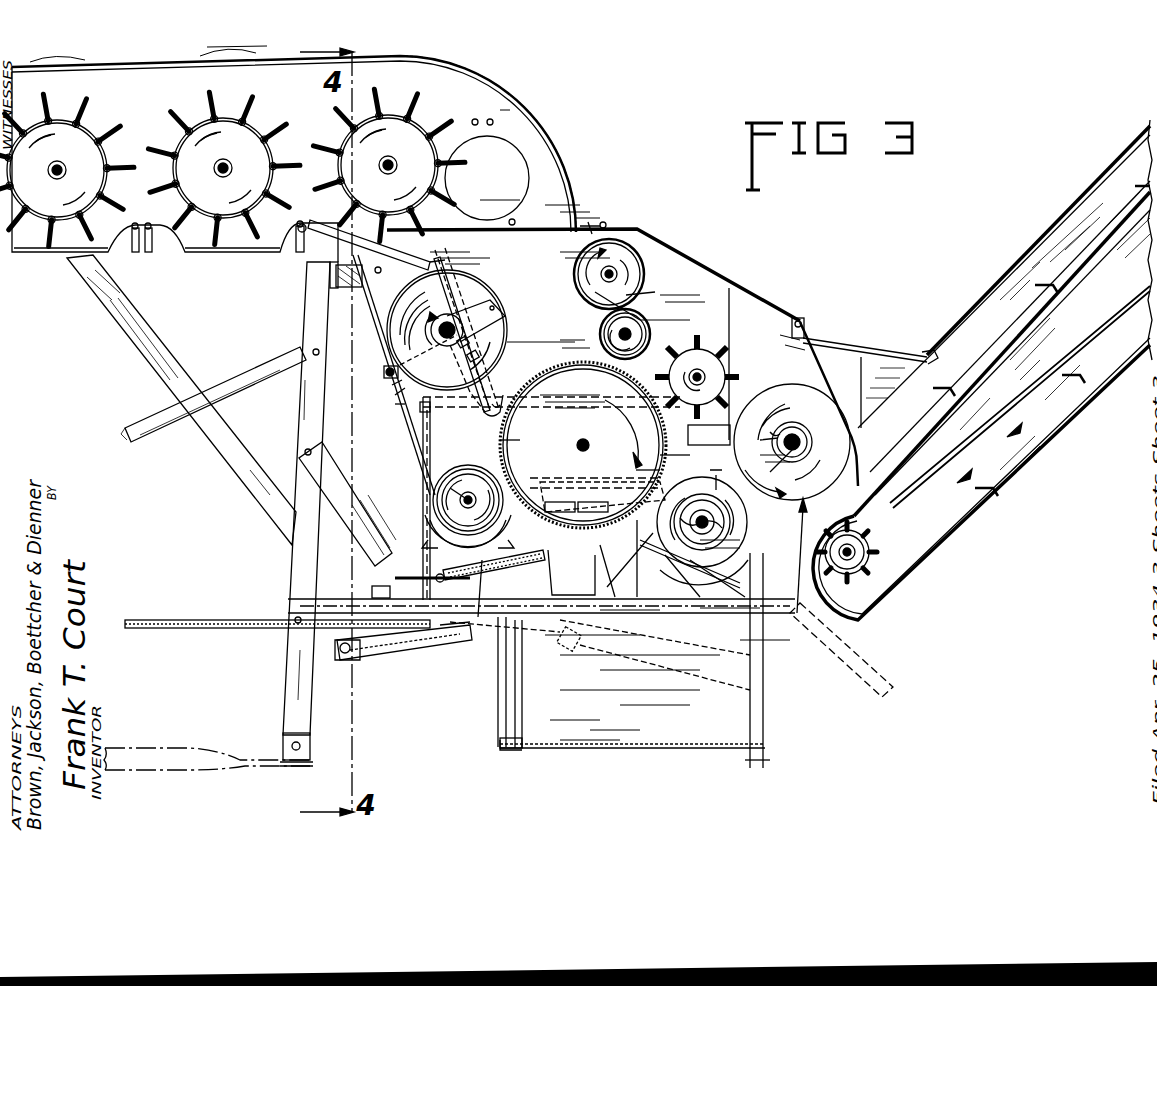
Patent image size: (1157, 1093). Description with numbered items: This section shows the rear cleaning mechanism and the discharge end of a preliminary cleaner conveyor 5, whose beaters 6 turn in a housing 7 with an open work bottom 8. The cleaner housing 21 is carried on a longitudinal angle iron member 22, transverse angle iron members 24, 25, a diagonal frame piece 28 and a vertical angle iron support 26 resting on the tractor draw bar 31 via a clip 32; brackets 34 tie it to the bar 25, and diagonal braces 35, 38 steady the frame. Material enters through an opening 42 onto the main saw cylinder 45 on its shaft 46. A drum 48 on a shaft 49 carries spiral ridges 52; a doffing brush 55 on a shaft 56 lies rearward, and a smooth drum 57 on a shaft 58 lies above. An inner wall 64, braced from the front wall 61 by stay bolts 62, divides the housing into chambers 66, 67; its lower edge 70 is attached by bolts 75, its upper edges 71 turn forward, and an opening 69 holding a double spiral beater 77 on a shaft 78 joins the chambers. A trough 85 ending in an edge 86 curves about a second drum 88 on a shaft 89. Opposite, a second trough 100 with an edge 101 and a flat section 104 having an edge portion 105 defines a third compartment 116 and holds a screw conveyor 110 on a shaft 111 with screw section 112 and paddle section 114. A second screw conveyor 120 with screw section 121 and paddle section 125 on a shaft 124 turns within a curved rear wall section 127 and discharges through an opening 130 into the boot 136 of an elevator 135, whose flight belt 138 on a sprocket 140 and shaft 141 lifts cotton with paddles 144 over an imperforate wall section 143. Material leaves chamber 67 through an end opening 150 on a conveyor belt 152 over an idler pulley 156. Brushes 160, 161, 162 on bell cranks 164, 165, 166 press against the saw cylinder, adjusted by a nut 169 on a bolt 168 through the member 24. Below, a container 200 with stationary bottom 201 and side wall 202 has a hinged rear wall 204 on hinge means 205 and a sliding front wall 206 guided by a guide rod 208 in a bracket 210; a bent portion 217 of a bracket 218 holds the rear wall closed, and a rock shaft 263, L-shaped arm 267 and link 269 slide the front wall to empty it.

The preliminary cleaner conveyor 5 is at (504, 92).
The beaters 6 is at (100, 125).
The housing 7 is at (526, 112).
The open work bottom 8 is at (200, 252).
The housing 21 is at (698, 280).
The longitudinal angle iron member 22 is at (345, 599).
The transverse angle iron member 24 is at (372, 588).
The transverse angle iron member 25 is at (334, 266).
The vertical angle iron support 26 is at (305, 405).
The diagonal frame piece 28 is at (347, 504).
The draw bar 31 is at (172, 768).
The clip 32 is at (283, 740).
The brackets 34 is at (345, 285).
The diagonal brace 35 is at (225, 400).
The diagonal brace 38 is at (165, 372).
The openings 42 is at (465, 240).
The main saw cylinder 45 is at (542, 362).
The shaft 46 is at (583, 445).
The drum 48 is at (638, 316).
The shaft 49 is at (602, 333).
The spiral ridges 52 is at (645, 333).
The doffing drum or brush 55 is at (705, 345).
The shaft 56 is at (705, 372).
The smooth drum 57 is at (604, 240).
The shaft 58 is at (590, 252).
The front wall 61 is at (384, 389).
The stay bolts 62 is at (384, 368).
The inner wall 64 is at (490, 414).
The chamber 66 is at (565, 270).
The chamber 67 is at (405, 404).
The opening 69 is at (484, 380).
The lowermost edges 70 is at (486, 398).
The upper edges 71 is at (410, 270).
The bolts 75 is at (447, 330).
The double spiral beater 77 is at (393, 375).
The shaft 78 is at (472, 302).
The concave wall or trough 85 is at (432, 522).
The edge 86 is at (521, 438).
The second drum 88 is at (473, 476).
The shaft 89 is at (460, 490).
The second trough or concave wall 100 is at (703, 600).
The forwardmost edge 101 is at (675, 560).
The horizontal section 104 is at (704, 437).
The edge portion 105 is at (681, 463).
The screw conveyor 110 is at (668, 590).
The shaft 111 is at (716, 470).
The screw conveyor section 112 is at (720, 520).
The paddle section 114 is at (702, 531).
The third chamber 116 is at (642, 462).
The second screw conveyor 120 is at (762, 396).
The screw conveyor section 121 is at (815, 380).
The shaft 124 is at (793, 422).
The paddle section 125 is at (810, 460).
The curved section 127 is at (838, 380).
The opening 130 is at (815, 565).
The elevator 135 is at (1010, 266).
The receiving boot 136 is at (845, 628).
The flight elevator belt 138 is at (1086, 362).
The sprocket 140 is at (860, 535).
The shaft 141 is at (852, 560).
The imperforate bottom or wall section 143 is at (958, 400).
The paddles 144 is at (995, 485).
The opening 150 is at (422, 462).
The conveyor belt 152 is at (520, 478).
The idler pulley 156 is at (604, 488).
The brush 160 is at (602, 494).
The brush 161 is at (590, 508).
The brush 162 is at (558, 508).
The bell crank 164 is at (618, 597).
The bell crank 165 is at (575, 597).
The bell crank 166 is at (520, 580).
The bolt 168 is at (420, 578).
The nut 169 is at (348, 660).
The hopper or container 200 is at (490, 742).
The stationary bottom 201 is at (680, 748).
The stationary side wall 202 is at (548, 745).
The movable rear wall 204 is at (765, 735).
The hinge means 205 is at (765, 548).
The movable front wall 206 is at (524, 702).
The guide rod 208 is at (210, 628).
The bracket 210 is at (395, 652).
The outwardly bent portion 217 is at (482, 630).
The bracket 218 is at (725, 632).
The rock shaft 263 is at (487, 564).
The L-shaped arm 267 is at (460, 640).
The link 269 is at (410, 650).